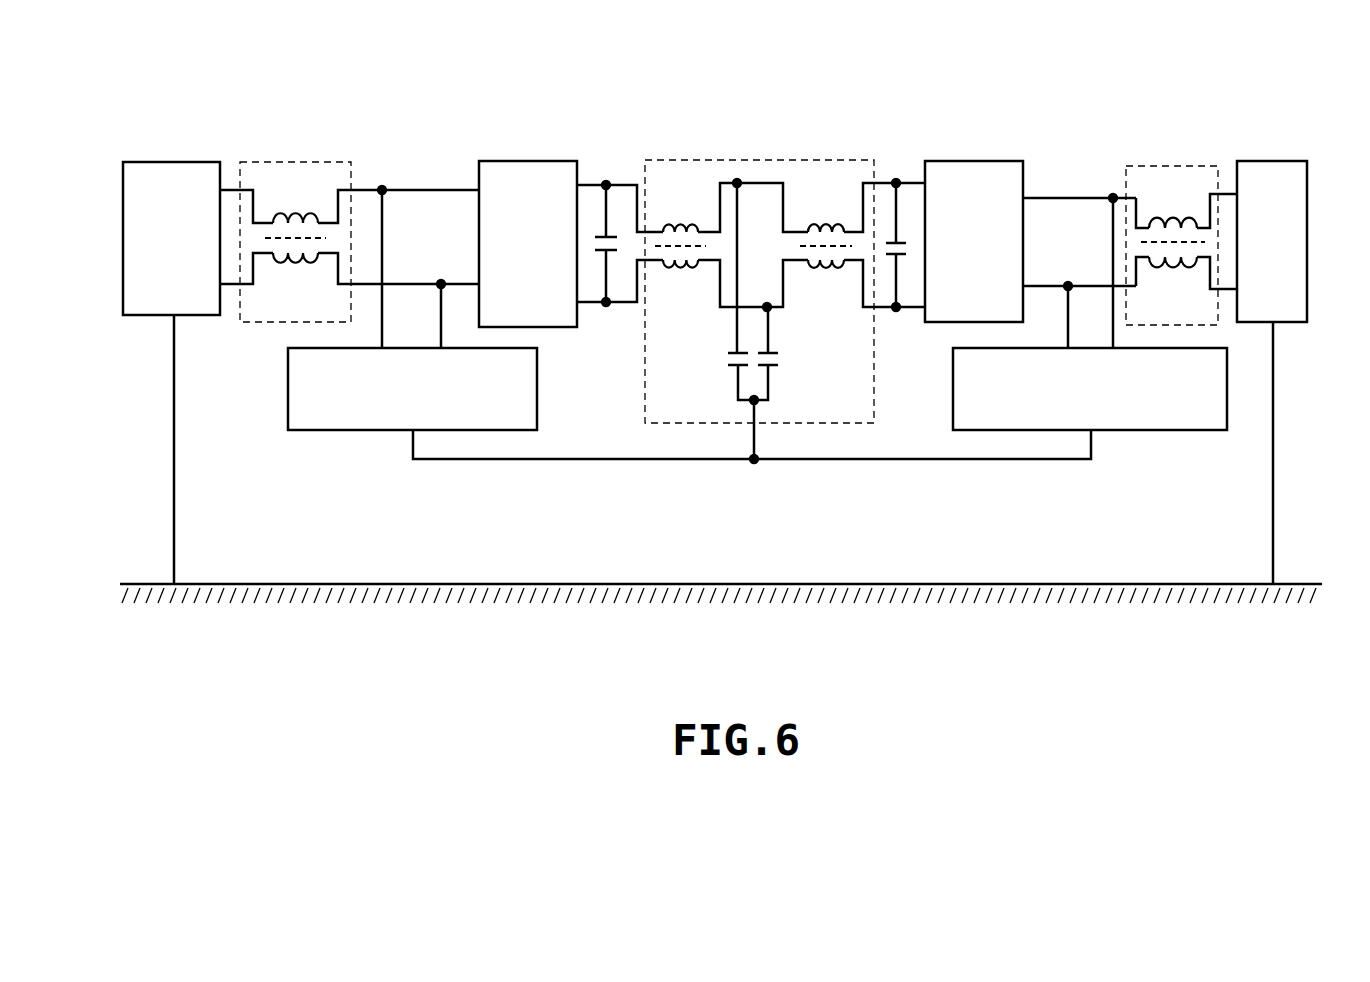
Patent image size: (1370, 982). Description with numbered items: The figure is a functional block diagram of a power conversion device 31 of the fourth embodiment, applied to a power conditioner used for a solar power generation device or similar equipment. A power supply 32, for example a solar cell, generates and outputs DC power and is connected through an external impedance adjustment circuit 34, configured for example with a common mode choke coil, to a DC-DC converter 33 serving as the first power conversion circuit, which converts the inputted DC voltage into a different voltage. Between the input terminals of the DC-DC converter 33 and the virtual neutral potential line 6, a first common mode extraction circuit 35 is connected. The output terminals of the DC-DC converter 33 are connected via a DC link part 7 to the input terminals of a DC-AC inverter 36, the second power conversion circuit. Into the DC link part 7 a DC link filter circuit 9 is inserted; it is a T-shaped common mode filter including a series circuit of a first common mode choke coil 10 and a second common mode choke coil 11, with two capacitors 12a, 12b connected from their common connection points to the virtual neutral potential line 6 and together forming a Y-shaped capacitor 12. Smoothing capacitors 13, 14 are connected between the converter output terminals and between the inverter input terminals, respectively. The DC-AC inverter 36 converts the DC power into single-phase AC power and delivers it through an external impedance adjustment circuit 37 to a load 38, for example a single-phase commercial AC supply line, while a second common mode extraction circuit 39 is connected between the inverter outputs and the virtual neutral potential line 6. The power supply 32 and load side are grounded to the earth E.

The power conversion device 31 is at (836, 96).
The power supply 32 is at (176, 160).
The DC-DC converter 33 is at (531, 161).
The external impedance adjustment circuit 34 is at (296, 162).
The first common mode extraction circuit 35 is at (352, 431).
The DC-AC inverter 36 is at (973, 161).
The external impedance adjustment circuit 37 is at (1168, 166).
The load 38 is at (1268, 161).
The second common mode extraction circuit 39 is at (1163, 431).
The virtual neutral potential line 6 is at (600, 461).
The DC link part 7 is at (765, 160).
The DC link filter circuit 9 is at (707, 160).
The first common mode choke coil 10 is at (677, 272).
The second common mode choke coil 11 is at (828, 273).
The Y-shaped capacitor 12 is at (757, 321).
The capacitor 12a is at (727, 360).
The capacitor 12b is at (780, 359).
The smoothing capacitor 13 is at (596, 243).
The smoothing capacitor 14 is at (902, 240).
The earth E is at (900, 582).